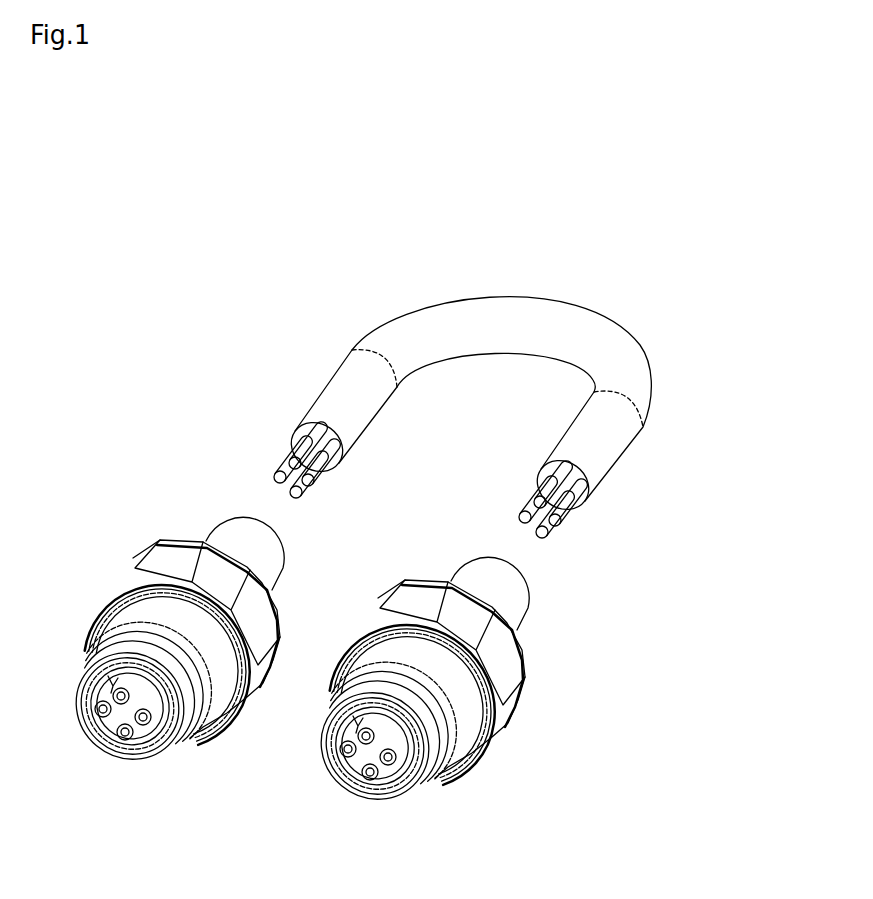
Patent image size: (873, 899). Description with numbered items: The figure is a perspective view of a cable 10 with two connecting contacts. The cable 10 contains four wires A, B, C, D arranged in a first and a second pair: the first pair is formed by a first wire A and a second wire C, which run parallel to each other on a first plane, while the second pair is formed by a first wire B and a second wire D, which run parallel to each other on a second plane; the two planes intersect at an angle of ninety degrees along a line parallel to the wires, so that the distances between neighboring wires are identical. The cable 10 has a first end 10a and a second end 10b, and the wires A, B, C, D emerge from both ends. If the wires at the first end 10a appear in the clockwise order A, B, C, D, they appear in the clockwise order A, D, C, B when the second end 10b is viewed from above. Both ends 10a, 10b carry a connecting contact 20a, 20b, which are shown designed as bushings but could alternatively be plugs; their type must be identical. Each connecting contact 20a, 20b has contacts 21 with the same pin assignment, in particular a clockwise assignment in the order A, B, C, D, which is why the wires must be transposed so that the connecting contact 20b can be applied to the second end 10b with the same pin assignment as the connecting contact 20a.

The cable 10 is at (370, 375).
The first end 10a is at (322, 407).
The second end 10b is at (593, 428).
The connecting contact 20a is at (150, 620).
The connecting contact 20b is at (457, 717).
The contacts 21 is at (130, 738).
The first wire of the first pair A is at (312, 485).
The first wire of the second pair B is at (307, 504).
The second wire of the first pair C is at (268, 468).
The second wire of the second pair D is at (287, 452).